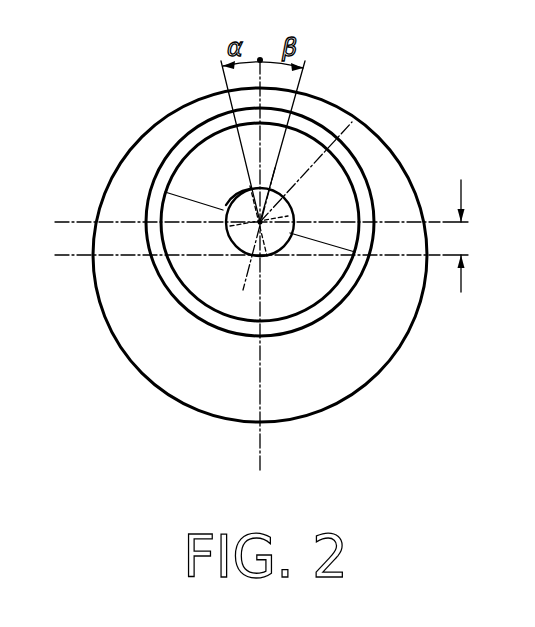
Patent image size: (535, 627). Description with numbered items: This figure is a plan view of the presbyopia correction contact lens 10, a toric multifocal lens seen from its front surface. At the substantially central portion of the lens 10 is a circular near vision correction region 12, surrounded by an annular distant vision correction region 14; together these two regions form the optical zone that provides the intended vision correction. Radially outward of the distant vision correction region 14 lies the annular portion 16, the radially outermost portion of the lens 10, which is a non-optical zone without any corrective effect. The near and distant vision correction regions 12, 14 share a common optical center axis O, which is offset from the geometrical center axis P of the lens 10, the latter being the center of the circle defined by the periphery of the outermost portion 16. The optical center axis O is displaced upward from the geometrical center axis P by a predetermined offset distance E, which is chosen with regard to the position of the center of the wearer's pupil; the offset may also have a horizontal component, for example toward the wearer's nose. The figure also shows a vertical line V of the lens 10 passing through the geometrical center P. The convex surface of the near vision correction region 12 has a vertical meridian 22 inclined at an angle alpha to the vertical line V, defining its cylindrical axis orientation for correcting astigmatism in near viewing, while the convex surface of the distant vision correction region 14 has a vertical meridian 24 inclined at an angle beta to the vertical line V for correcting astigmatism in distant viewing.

The presbyopia correction contact lens 10 is at (263, 233).
The near vision correction region 12 is at (292, 192).
The distant vision correction region 14 is at (193, 310).
The annular portion 16 is at (377, 397).
The vertical meridian 22 is at (237, 197).
The vertical meridian 24 is at (287, 162).
The optical center axis O is at (262, 224).
The geometrical center axis P is at (268, 266).
The offset distance E is at (467, 236).
The vertical line V is at (261, 484).